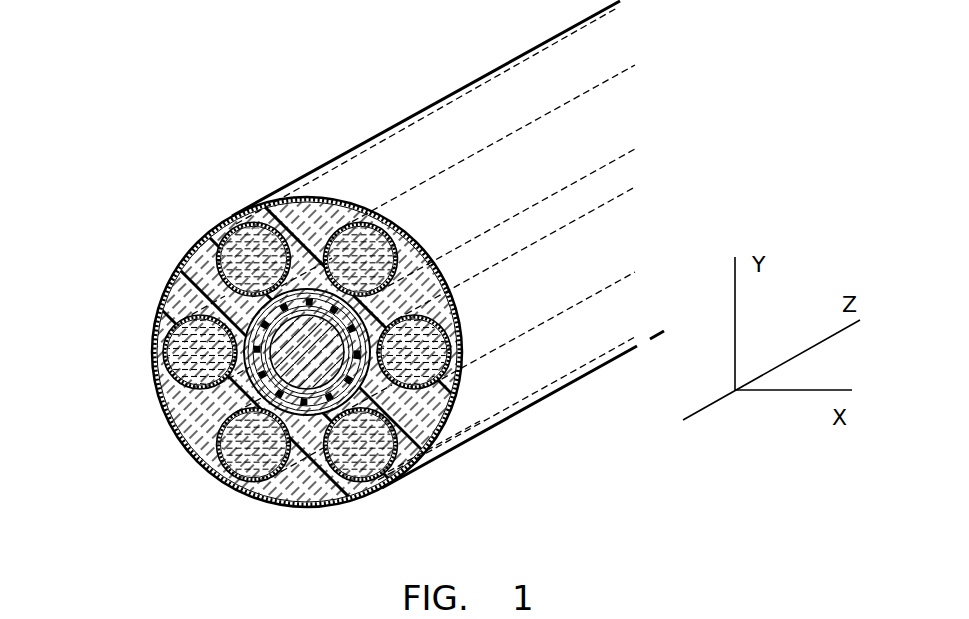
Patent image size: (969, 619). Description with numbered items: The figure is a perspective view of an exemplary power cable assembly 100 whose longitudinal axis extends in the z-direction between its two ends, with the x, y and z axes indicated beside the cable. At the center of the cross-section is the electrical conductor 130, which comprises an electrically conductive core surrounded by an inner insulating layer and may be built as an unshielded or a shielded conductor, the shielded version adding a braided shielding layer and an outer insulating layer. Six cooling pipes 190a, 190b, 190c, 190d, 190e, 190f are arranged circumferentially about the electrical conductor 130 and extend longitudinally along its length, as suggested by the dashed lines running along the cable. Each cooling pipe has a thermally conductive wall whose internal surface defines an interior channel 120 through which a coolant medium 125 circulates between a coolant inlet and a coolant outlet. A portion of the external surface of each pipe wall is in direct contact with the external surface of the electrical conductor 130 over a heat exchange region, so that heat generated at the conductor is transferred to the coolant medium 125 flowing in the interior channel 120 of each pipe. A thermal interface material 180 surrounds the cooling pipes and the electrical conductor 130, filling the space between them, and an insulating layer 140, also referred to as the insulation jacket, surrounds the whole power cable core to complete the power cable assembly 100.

The power cable assembly 100 is at (647, 103).
The interior channel 120 is at (258, 247).
The coolant medium 125 is at (362, 462).
The electrical conductor 130 is at (373, 393).
The insulating layer 140 is at (560, 388).
The thermal interface material 180 is at (183, 277).
The cooling pipe 190a is at (460, 370).
The cooling pipe 190b is at (372, 224).
The cooling pipe 190c is at (255, 221).
The cooling pipe 190d is at (160, 353).
The cooling pipe 190e is at (217, 480).
The cooling pipe 190f is at (293, 506).